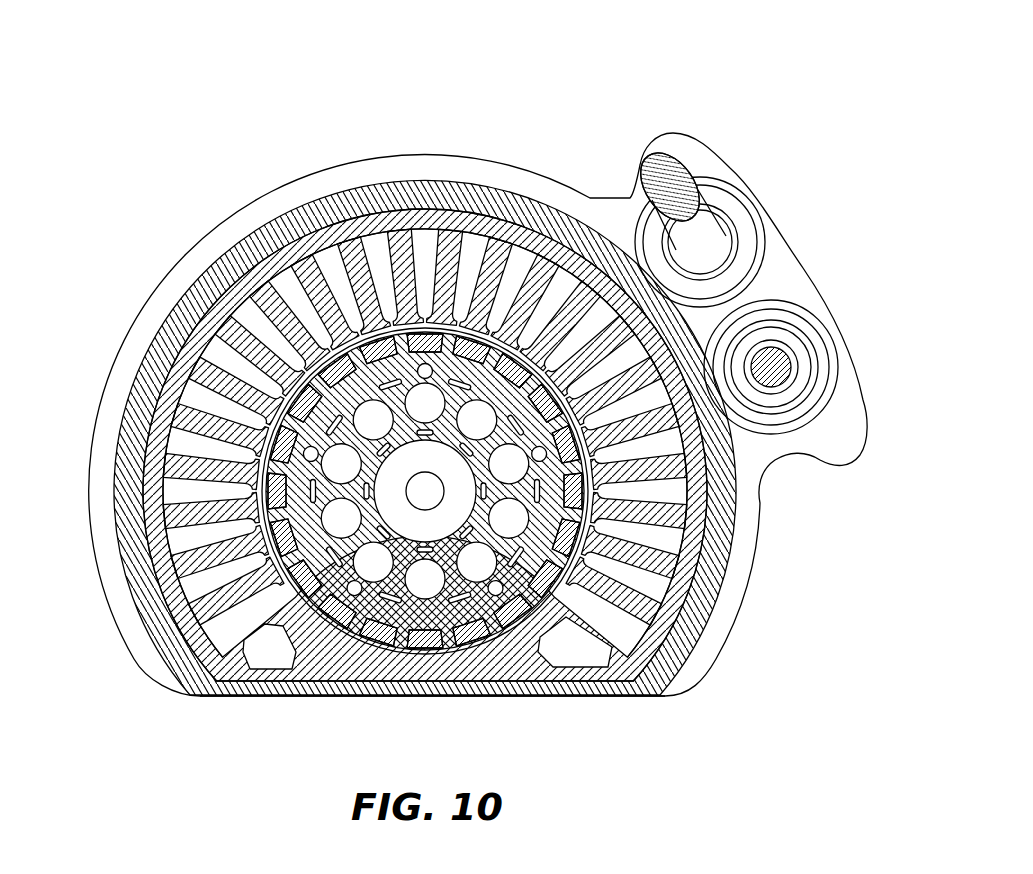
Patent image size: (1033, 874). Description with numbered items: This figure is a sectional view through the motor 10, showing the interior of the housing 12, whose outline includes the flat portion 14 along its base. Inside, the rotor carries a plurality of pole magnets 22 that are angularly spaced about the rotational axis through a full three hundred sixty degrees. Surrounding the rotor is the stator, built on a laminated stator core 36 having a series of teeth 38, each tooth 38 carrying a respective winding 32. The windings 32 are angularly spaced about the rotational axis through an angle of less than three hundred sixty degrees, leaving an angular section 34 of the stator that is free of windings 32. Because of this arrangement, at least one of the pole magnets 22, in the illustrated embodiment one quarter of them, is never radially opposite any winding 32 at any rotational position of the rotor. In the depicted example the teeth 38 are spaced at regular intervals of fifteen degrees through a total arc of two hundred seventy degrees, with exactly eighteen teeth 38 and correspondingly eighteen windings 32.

The motor 10 is at (516, 55).
The housing 12 is at (122, 637).
The flat portion 14 is at (590, 697).
The pole magnets 22 is at (330, 640).
The windings 32 is at (245, 298).
The angular section 34 is at (463, 677).
The laminated stator core 36 is at (427, 213).
The tooth 38 is at (185, 357).